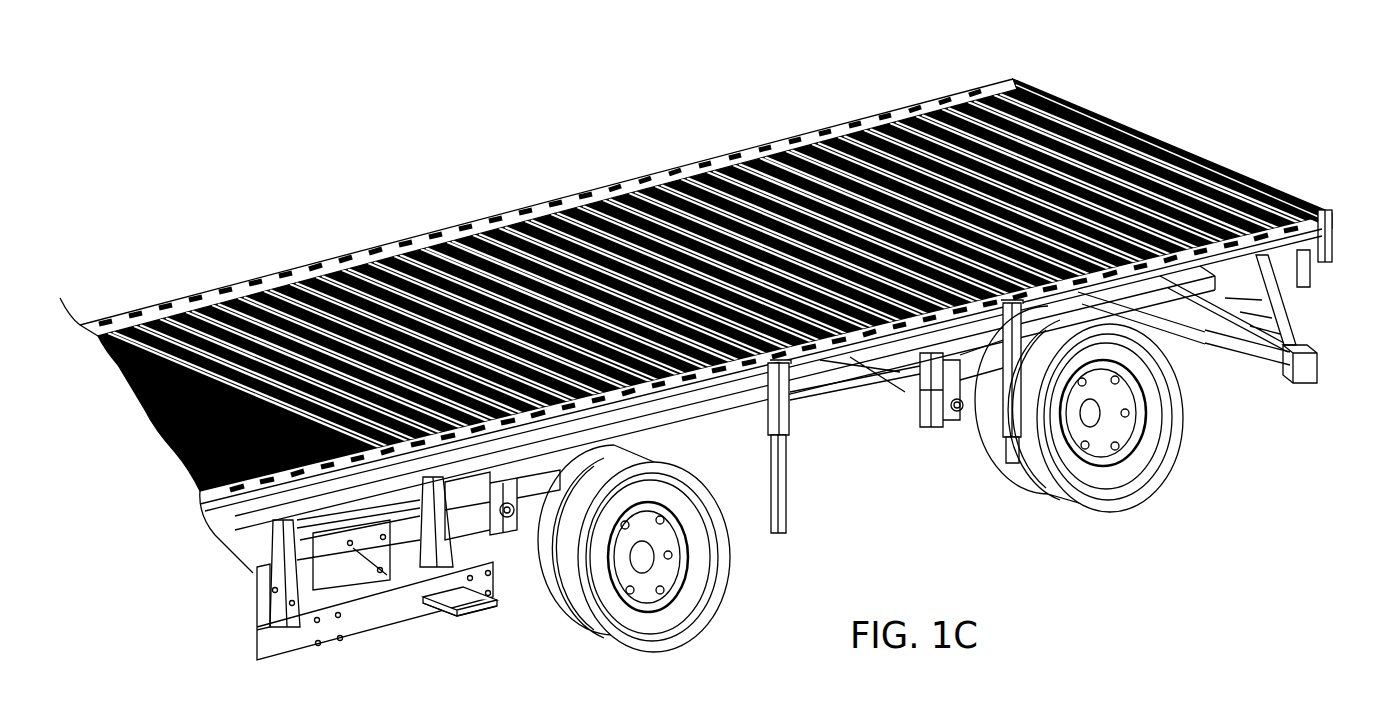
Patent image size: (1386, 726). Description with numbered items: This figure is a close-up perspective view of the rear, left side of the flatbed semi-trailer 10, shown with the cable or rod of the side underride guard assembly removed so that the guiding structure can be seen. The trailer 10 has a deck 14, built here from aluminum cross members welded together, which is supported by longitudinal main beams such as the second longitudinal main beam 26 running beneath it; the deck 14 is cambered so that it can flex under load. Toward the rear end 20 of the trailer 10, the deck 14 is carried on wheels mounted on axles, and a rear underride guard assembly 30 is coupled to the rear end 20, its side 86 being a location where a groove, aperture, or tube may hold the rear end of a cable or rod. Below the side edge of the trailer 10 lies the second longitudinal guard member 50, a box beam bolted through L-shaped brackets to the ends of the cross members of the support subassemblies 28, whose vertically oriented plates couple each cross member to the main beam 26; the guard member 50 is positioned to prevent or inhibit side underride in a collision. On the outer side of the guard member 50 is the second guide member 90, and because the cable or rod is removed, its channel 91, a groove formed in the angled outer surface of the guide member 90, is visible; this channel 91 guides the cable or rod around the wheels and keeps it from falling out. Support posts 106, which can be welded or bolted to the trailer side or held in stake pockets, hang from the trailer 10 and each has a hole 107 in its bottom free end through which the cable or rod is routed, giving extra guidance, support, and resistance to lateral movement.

The flatbed semi-trailer 10 is at (721, 372).
The deck 14 is at (921, 162).
The rear end 20 is at (696, 271).
The second longitudinal main beam 26 is at (233, 533).
The support subassembly 28 is at (352, 552).
The rear underride guard assembly 30 is at (1288, 319).
The second longitudinal guard member 50 is at (375, 595).
The side of the rear underride guard assembly 86 is at (1326, 362).
The second guide member 90 is at (457, 600).
The channel 91 is at (483, 614).
The support post 106 is at (786, 448).
The hole 107 is at (772, 538).